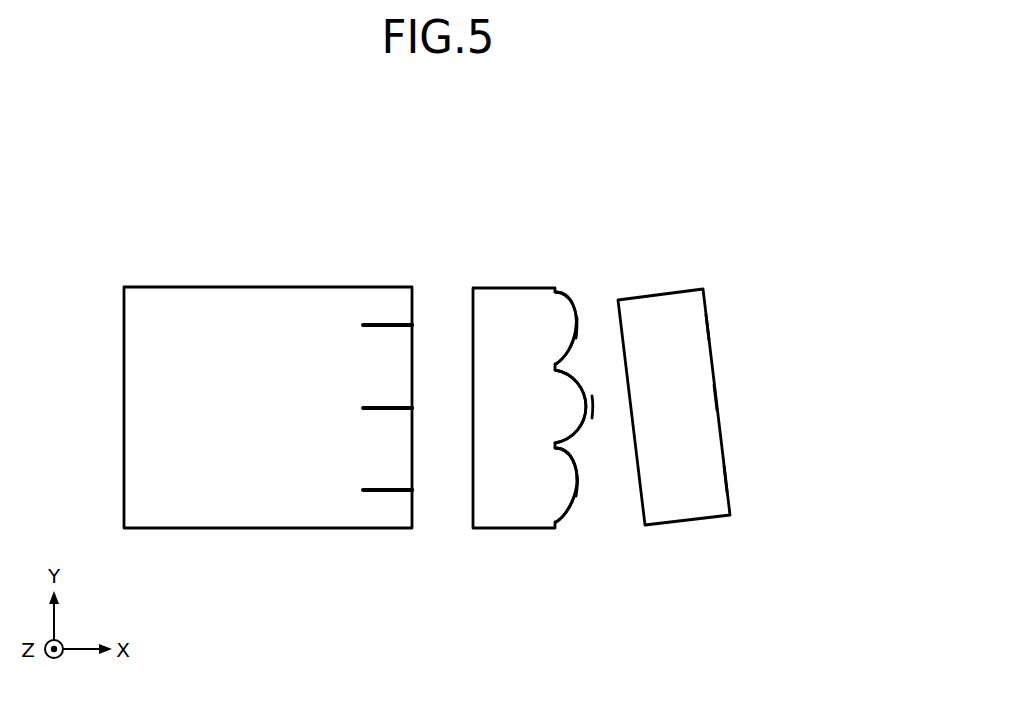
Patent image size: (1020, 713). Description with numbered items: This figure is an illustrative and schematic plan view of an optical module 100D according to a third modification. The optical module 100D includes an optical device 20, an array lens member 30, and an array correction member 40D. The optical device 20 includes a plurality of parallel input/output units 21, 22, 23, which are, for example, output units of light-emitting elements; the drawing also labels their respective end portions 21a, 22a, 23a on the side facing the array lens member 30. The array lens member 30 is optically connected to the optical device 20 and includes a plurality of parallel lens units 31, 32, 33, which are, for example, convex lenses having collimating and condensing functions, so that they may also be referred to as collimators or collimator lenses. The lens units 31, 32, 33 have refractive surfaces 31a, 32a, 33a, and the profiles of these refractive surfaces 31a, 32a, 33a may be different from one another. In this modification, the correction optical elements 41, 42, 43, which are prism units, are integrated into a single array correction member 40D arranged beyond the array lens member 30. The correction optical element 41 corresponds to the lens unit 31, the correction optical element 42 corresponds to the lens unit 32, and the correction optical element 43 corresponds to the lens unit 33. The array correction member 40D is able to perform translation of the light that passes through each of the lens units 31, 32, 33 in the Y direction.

The optical module 100D is at (728, 147).
The optical device 20 is at (190, 275).
The input/output unit 21 is at (385, 325).
The light emitting surface of first element 21a is at (415, 327).
The input/output unit 22 is at (375, 410).
The light emitting surface of second element 22a is at (413, 409).
The input/output unit 23 is at (379, 492).
The light emitting surface of third element 23a is at (412, 493).
The array lens member 30 is at (485, 276).
The lens unit 31 is at (567, 325).
The refractive surface 31a is at (576, 328).
The lens unit 32 is at (573, 408).
The refractive surface 32a is at (594, 400).
The lens unit 33 is at (562, 487).
The refractive surface 33a is at (577, 484).
The array correction member 40D is at (679, 286).
The correction optical element 41 is at (668, 331).
The correction optical element 42 is at (677, 403).
The correction optical element 43 is at (695, 482).